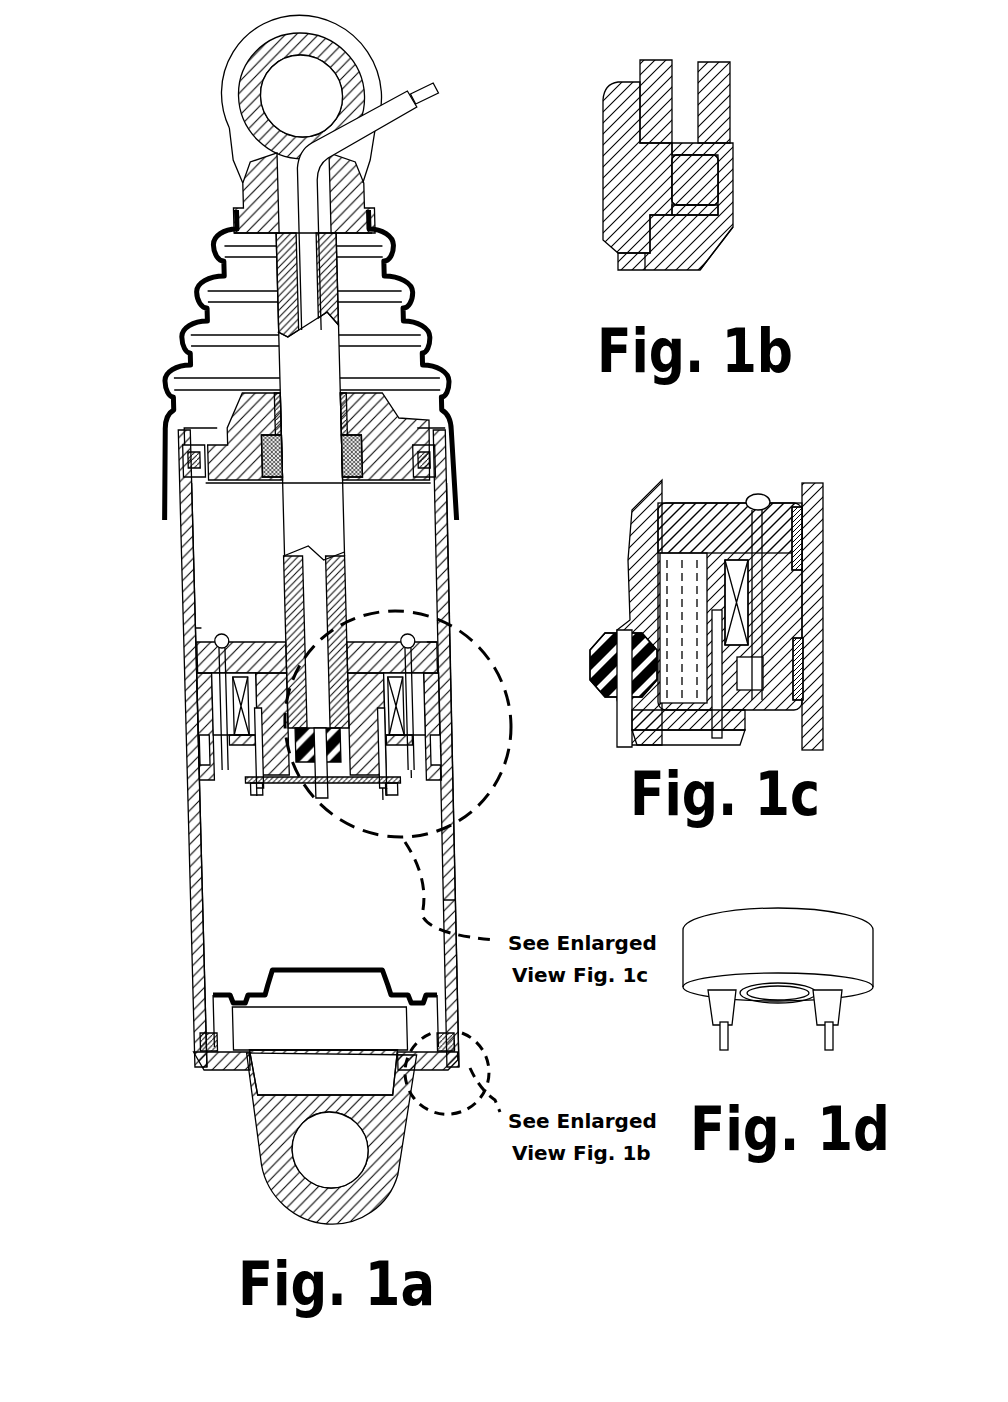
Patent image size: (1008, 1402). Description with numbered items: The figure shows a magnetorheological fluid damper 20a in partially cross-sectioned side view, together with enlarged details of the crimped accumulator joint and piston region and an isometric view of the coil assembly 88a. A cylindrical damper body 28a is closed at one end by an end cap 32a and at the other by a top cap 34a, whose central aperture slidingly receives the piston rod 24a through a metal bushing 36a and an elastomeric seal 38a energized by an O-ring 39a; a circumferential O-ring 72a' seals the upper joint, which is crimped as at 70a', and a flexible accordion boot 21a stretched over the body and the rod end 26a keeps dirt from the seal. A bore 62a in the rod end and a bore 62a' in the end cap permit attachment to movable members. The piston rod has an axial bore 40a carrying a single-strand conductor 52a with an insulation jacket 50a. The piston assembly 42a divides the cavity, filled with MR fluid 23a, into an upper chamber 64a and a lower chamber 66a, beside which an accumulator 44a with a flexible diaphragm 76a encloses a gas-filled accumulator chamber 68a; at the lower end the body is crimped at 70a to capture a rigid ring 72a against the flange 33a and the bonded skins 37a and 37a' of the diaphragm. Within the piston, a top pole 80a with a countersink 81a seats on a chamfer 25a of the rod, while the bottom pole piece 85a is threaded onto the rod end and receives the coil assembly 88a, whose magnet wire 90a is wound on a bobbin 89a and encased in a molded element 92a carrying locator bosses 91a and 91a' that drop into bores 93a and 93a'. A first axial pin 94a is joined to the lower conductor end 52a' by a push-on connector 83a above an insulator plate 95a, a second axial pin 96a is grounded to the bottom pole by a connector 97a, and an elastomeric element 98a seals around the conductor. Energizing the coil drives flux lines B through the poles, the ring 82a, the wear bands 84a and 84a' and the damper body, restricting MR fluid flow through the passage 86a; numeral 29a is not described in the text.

In FIG. 1A, the rod end 26a is at (222, 62).
In FIG. 1A, the bore 62a is at (351, 84).
In FIG. 1A, the single-strand electrical conductor 52a is at (470, 98).
In FIG. 1A, the outer jacket of insulation 50a is at (380, 120).
In FIG. 1A, the axial bore 40a is at (305, 278).
In FIG. 1A, the flexible accordion boot 21a is at (190, 296).
In FIG. 1A, the metal bushing 36a is at (345, 400).
In FIG. 1A, the top cap 34a is at (380, 410).
In FIG. 1A, the crimp 70a' is at (239, 451).
In FIG. 1A, the circumferential O-ring 72a' is at (235, 475).
In FIG. 1A, the elastomeric seal 38a is at (355, 460).
In FIG. 1A, the MR fluid 23a is at (186, 532).
In FIG. 1A, the upper chamber 64a is at (235, 515).
In FIG. 1A, the piston rod 24a is at (312, 480).
In FIG. 1A, the O-ring 39a is at (357, 490).
In FIG. 1A, the MR fluid damper 20a is at (180, 578).
In FIG. 1A, the chamfer 25a is at (265, 640).
In FIG. 1A, the damper body 28a is at (452, 572).
In FIG. 1C, the damper body 28a is at (826, 702).
In FIG. 1A, the top pole 80a is at (205, 640).
In FIG. 1C, the top pole 80a is at (708, 503).
In FIG. 1A, the piston ring 29a is at (195, 628).
In FIG. 1A, the countersink 81a is at (420, 612).
In FIG. 1A, the bottom pole piece 85a is at (427, 640).
In FIG. 1C, the bottom pole piece 85a is at (662, 590).
In FIG. 1A, the ring 82a is at (205, 652).
In FIG. 1C, the ring 82a is at (792, 600).
In FIG. 1A, the wear band 84a is at (255, 726).
In FIG. 1C, the wear band 84a is at (843, 528).
In FIG. 1A, the spool-shaped bobbin 89a is at (447, 668).
In FIG. 1A, the coil assembly 88a is at (228, 713).
In FIG. 1C, the coil assembly 88a is at (752, 602).
In FIG. 1D, the coil assembly 88a is at (732, 927).
In FIG. 1A, the wear band 84a' is at (260, 751).
In FIG. 1C, the wear band 84a' is at (854, 669).
In FIG. 1A, the magnet wire 90a is at (400, 730).
In FIG. 1C, the magnet wire 90a is at (724, 690).
In FIG. 1A, the molded element 92a is at (440, 748).
In FIG. 1A, the locator boss 91a' is at (484, 786).
In FIG. 1D, the locator boss 91a' is at (872, 1017).
In FIG. 1A, the piston assembly 42a is at (196, 775).
In FIG. 1A, the axial bore 93a is at (471, 806).
In FIG. 1A, the flow passage 86a is at (222, 745).
In FIG. 1C, the flow passage 86a is at (766, 500).
In FIG. 1A, the insulator plate 95a is at (392, 805).
In FIG. 1A, the axial bore 93a' is at (183, 835).
In FIG. 1A, the second axial pin 96a is at (258, 792).
In FIG. 1D, the second axial pin 96a is at (720, 1042).
In FIG. 1A, the connector 97a is at (300, 786).
In FIG. 1A, the locator boss 91a is at (301, 795).
In FIG. 1D, the locator boss 91a is at (682, 1017).
In FIG. 1A, the lower end of single-strand conductor 52a' is at (329, 808).
In FIG. 1A, the elastomeric element 98a is at (383, 798).
In FIG. 1A, the first axial pin 94a is at (382, 815).
In FIG. 1D, the first axial pin 94a is at (832, 1042).
In FIG. 1A, the push-on electrical connector 83a is at (470, 904).
In FIG. 1A, the accumulator 44a is at (212, 990).
In FIG. 1A, the flexible diaphragm 76a is at (330, 975).
In FIG. 1B, the flexible diaphragm 76a is at (656, 75).
In FIG. 1A, the lower chamber 66a is at (380, 919).
In FIG. 1A, the rigid ring 72a is at (267, 1037).
In FIG. 1B, the rigid ring 72a is at (740, 180).
In FIG. 1A, the crimp 70a is at (285, 1078).
In FIG. 1B, the crimp 70a is at (701, 192).
In FIG. 1A, the flange 33a is at (483, 1050).
In FIG. 1B, the flange 33a is at (708, 238).
In FIG. 1A, the end cap 32a is at (260, 1125).
In FIG. 1A, the bore 62a' is at (393, 1150).
In FIG. 1A, the accumulator chamber 68a is at (320, 1051).
In FIG. 1B, the bonded skin 37a is at (754, 110).
In FIG. 1B, the bonded skin 37a' is at (749, 223).
In FIG. 1C, the lines of flux B is at (805, 640).